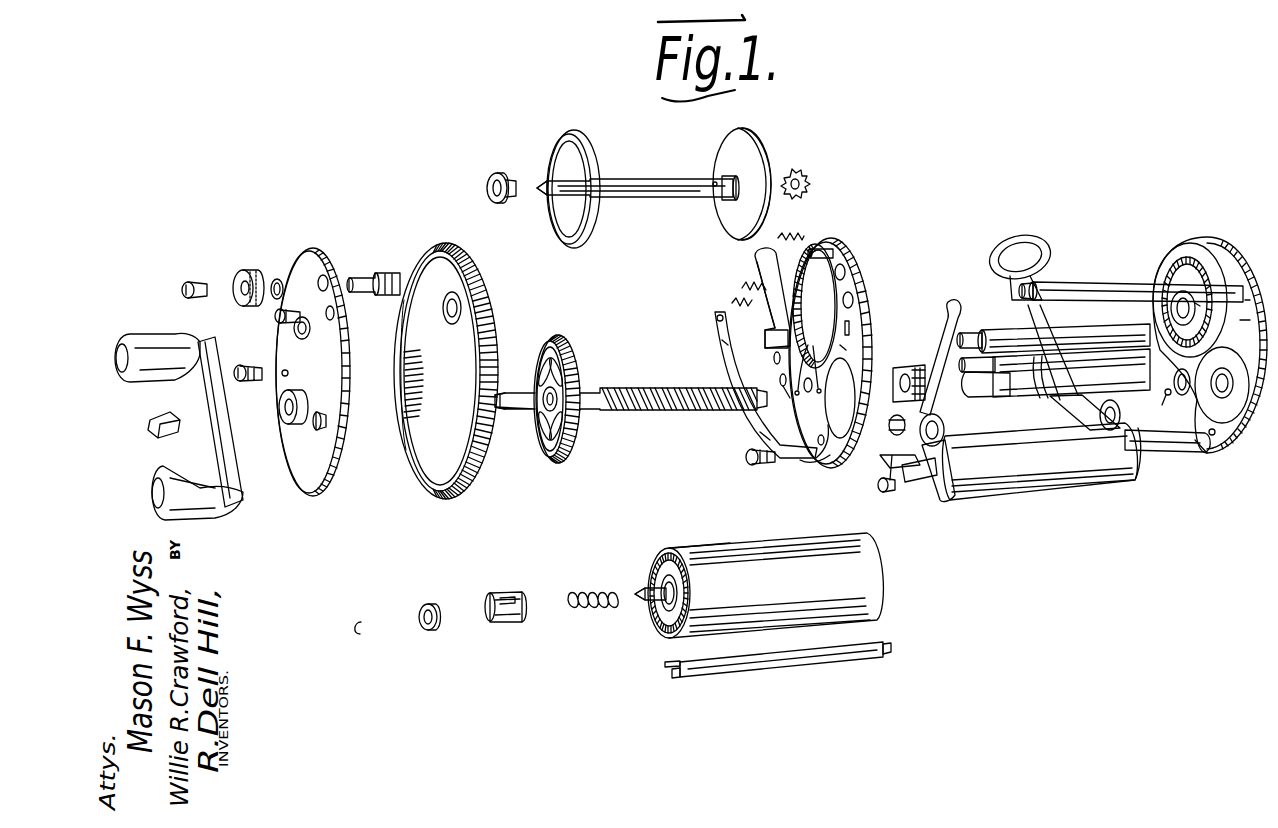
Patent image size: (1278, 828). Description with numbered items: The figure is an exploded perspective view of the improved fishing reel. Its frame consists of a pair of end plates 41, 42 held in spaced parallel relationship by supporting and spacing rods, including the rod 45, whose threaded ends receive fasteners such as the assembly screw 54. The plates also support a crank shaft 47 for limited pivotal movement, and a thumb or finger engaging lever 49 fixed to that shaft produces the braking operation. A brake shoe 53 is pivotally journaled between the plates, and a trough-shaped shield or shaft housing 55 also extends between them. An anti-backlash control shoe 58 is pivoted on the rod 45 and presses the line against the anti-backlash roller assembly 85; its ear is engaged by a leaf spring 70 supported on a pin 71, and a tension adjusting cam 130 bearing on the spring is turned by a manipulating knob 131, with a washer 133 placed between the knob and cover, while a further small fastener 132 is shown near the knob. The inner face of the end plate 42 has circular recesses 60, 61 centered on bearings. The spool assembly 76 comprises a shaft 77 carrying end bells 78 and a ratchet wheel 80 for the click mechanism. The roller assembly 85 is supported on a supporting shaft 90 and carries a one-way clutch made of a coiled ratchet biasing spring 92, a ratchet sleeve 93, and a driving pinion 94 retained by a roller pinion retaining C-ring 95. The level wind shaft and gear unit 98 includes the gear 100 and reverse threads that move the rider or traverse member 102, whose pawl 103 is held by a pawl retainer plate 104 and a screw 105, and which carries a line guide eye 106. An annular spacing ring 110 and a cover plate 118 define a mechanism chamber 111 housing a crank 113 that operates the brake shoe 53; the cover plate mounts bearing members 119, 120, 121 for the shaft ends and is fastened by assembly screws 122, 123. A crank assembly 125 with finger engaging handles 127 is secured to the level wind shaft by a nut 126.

The end plate 41 is at (862, 260).
The end plate 42 is at (1200, 237).
The finger engaging handle 127 is at (150, 345).
The crank assembly 125 is at (240, 475).
The cover plate 118 is at (315, 250).
The annular spacing ring 110 is at (488, 268).
The gear 100 is at (566, 350).
The level wind shaft and gear unit 98 is at (608, 378).
The anti-backlash roller assembly 85 is at (802, 574).
The anti-backlash control shoe 58 is at (1050, 500).
The brake shoe 53 is at (782, 660).
The spool assembly 76 is at (654, 166).
The shaft 77 is at (652, 198).
The end bells 78 is at (585, 145).
The ratchet wheel 80 is at (800, 170).
The crank 113 is at (810, 462).
The leaf spring 70 is at (772, 248).
The pin 71 is at (820, 272).
The line guide eye 106 is at (952, 300).
The supporting and spacing rod 45 is at (1100, 283).
The crank shaft 47 is at (1000, 324).
The shield or shaft housing 55 is at (1018, 397).
The thumb or finger engaging lever 49 is at (1040, 242).
The circular recess 60 is at (1170, 250).
The circular recess 61 is at (1236, 404).
The coiled ratchet biasing spring 92 is at (585, 610).
The ratchet sleeve 93 is at (503, 624).
The driving pinion 94 is at (427, 632).
The roller pinion retaining C-ring 95 is at (356, 636).
The supporting shaft 90 is at (645, 600).
The manipulating knob 131 is at (250, 268).
The screw 132 is at (195, 280).
The washer 133 is at (278, 278).
The tension adjusting cam 130 is at (388, 272).
The assembly screw 122 is at (244, 358).
The assembly screw 123 is at (276, 318).
The nut 126 is at (168, 412).
The assembly screw 54 is at (748, 460).
The screw 105 is at (880, 492).
The pawl retainer plate 104 is at (900, 470).
The pawl 103 is at (905, 402).
The rider or traverse member 102 is at (900, 368).
The mechanism chamber 111 is at (440, 438).
The bearing member 119 is at (310, 332).
The bearing member 120 is at (328, 420).
The bearing member 121 is at (300, 398).